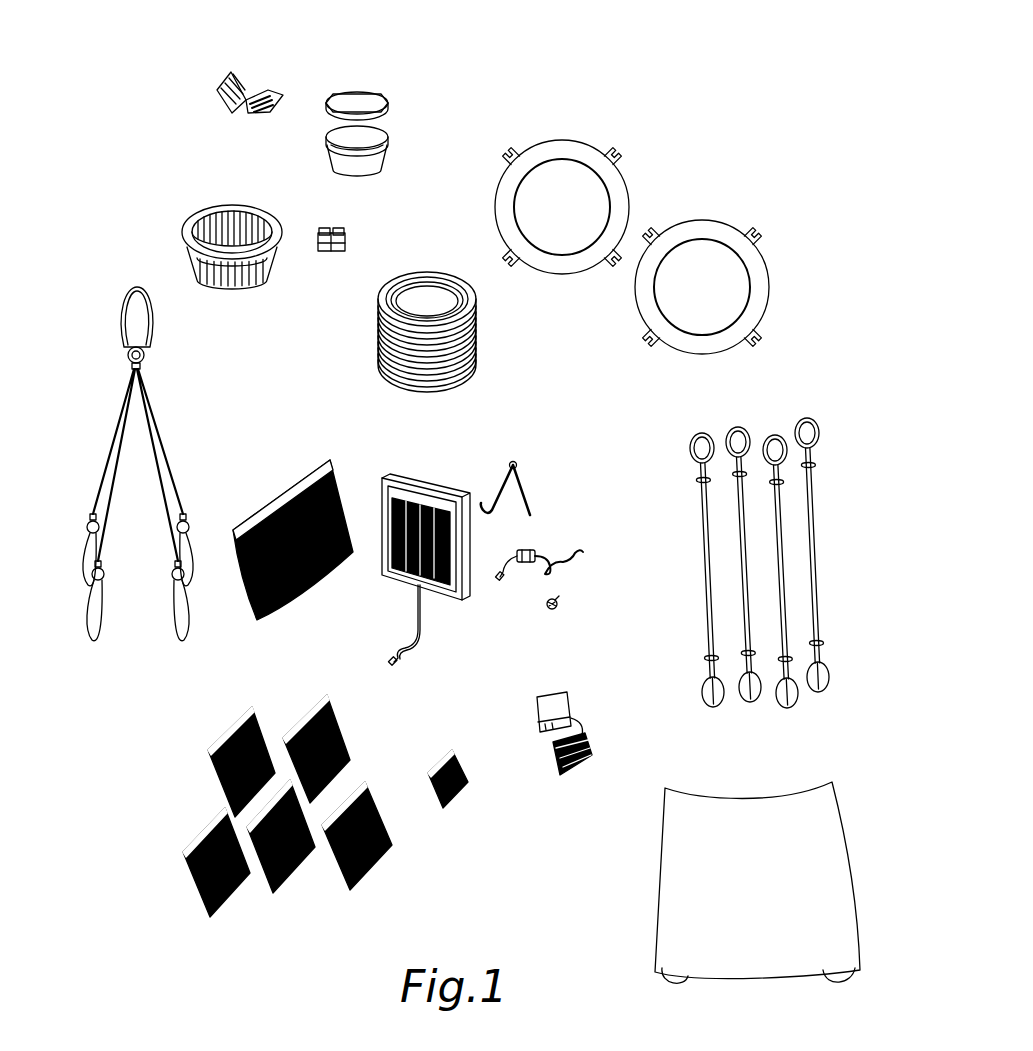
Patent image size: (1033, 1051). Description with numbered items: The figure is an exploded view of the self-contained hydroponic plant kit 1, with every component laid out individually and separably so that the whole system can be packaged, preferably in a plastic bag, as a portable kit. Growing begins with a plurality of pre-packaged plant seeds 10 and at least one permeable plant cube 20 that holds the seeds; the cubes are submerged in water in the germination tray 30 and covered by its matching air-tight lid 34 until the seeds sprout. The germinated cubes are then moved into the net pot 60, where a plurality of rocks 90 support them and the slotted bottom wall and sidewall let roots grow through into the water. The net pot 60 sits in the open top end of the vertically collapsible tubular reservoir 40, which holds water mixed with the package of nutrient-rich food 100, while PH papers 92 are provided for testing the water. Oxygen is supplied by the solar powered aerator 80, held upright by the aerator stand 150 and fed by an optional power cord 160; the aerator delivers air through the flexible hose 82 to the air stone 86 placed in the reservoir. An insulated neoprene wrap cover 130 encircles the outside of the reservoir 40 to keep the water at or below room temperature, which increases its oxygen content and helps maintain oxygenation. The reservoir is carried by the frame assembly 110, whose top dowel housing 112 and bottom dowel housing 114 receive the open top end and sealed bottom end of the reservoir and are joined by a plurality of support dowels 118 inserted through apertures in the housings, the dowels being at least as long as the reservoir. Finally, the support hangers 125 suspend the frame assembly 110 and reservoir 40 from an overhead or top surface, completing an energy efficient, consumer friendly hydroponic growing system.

The self-contained hydroponic plant kit 1 is at (97, 218).
The plant seeds 10 is at (447, 750).
The plant cube 20 is at (347, 230).
The germination tray 30 is at (373, 137).
The air-tight lid 34 is at (365, 100).
The vertically collapsible tubular reservoir 40 is at (482, 357).
The net pot 60 is at (223, 220).
The solar powered aerator 80 is at (455, 597).
The flexible hose 82 is at (525, 560).
The air stone 86 is at (560, 603).
The rocks 90 is at (297, 492).
The PH papers 92 is at (252, 97).
The package of nutrient-rich food 100 is at (222, 738).
The frame assembly 110 is at (565, 137).
The top dowel housing 112 is at (613, 170).
The bottom dowel housing 114 is at (707, 220).
The support dowels 118 is at (812, 520).
The support hangers 125 is at (162, 423).
The insulated neoprene wrap cover 130 is at (675, 875).
The aerator stand 150 is at (522, 482).
The power cord 160 is at (557, 707).